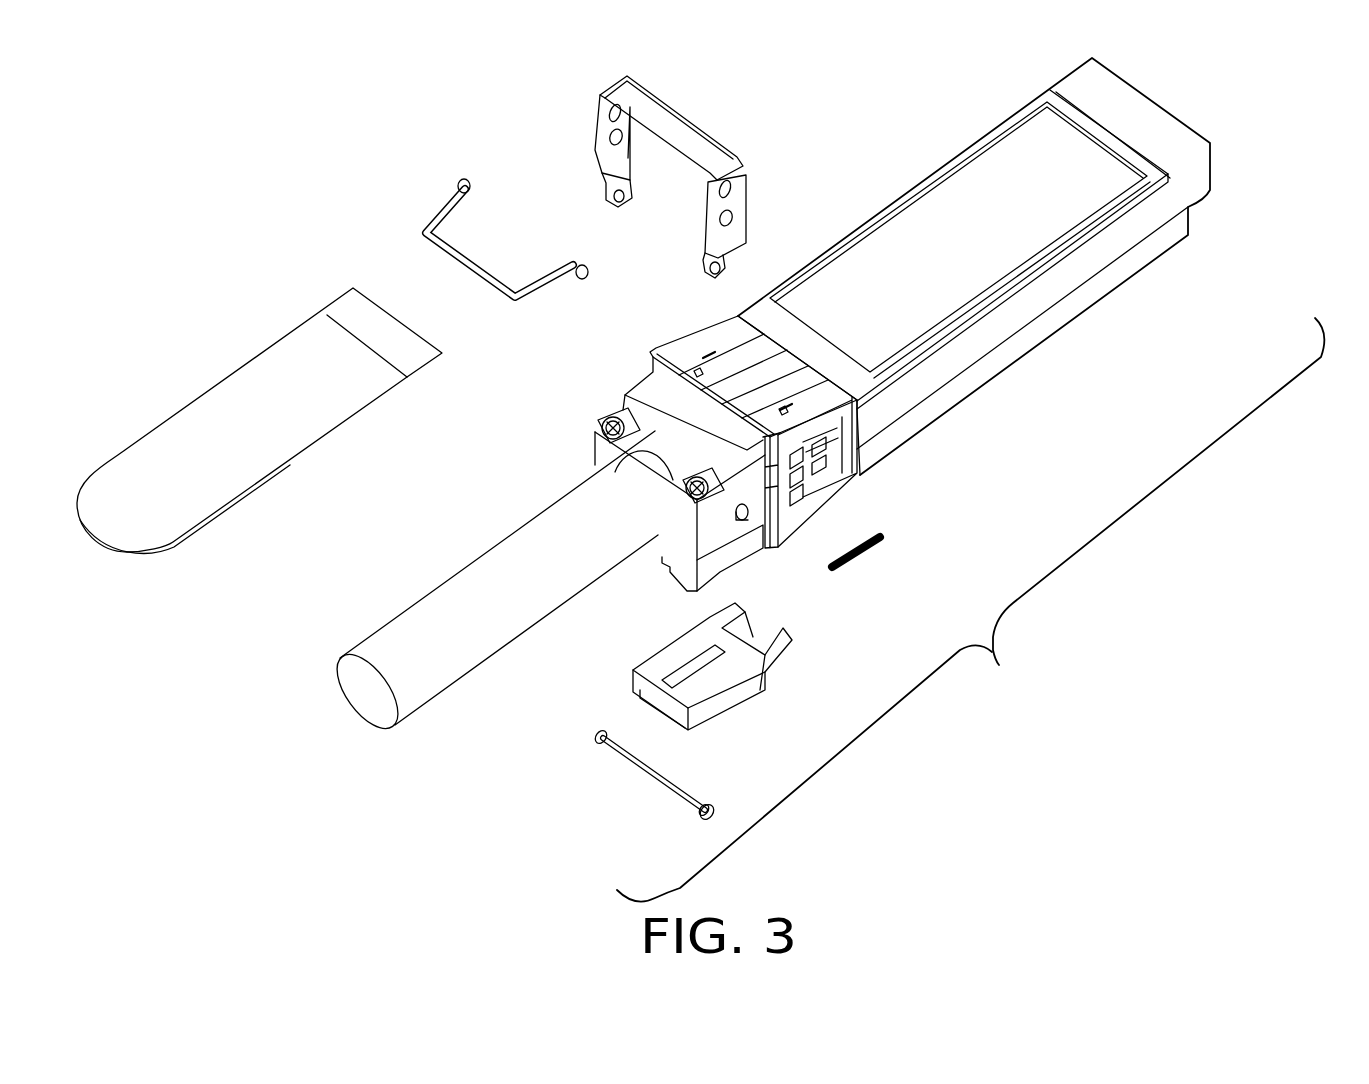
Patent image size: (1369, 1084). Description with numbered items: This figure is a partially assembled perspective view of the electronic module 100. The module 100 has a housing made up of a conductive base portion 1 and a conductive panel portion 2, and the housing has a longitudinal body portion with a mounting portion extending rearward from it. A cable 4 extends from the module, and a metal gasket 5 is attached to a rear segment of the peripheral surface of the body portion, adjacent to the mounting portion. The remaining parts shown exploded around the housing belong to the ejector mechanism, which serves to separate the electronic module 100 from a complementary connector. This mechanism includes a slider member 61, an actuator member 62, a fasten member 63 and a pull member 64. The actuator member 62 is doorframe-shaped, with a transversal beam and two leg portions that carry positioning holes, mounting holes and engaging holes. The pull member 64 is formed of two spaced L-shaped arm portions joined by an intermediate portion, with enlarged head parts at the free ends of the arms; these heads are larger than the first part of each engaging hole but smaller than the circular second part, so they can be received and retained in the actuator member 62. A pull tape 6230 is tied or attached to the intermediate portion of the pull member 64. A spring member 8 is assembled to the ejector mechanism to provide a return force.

The conductive base portion 1 is at (1063, 308).
The conductive panel portion 2 is at (936, 218).
The cable 4 is at (450, 621).
The metal gasket 5 is at (830, 444).
The spring member 8 is at (862, 567).
The slider member 61 is at (750, 697).
The actuator member 62 is at (582, 119).
The fasten member 63 is at (629, 788).
The pull member 64 is at (433, 210).
The pull tape 6230 is at (237, 407).
The electronic module 100 is at (970, 610).